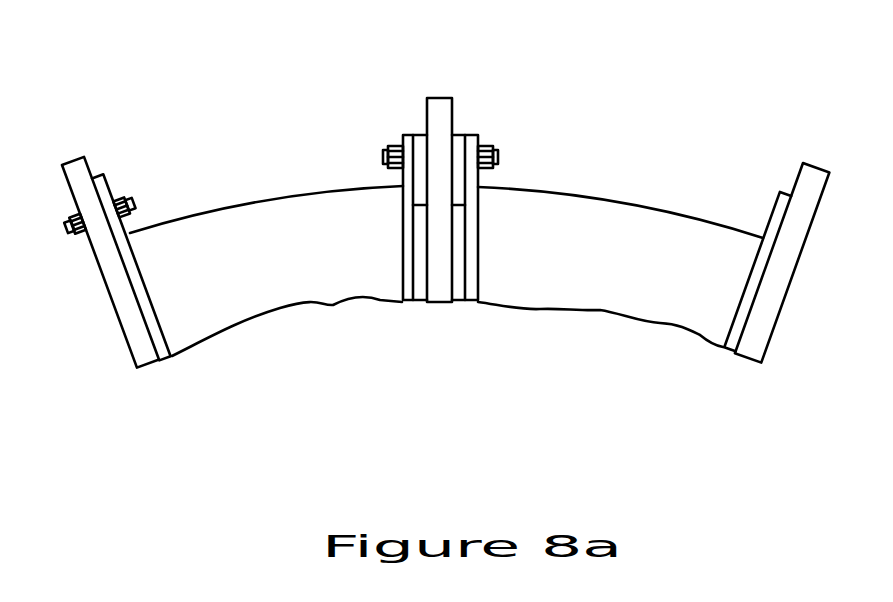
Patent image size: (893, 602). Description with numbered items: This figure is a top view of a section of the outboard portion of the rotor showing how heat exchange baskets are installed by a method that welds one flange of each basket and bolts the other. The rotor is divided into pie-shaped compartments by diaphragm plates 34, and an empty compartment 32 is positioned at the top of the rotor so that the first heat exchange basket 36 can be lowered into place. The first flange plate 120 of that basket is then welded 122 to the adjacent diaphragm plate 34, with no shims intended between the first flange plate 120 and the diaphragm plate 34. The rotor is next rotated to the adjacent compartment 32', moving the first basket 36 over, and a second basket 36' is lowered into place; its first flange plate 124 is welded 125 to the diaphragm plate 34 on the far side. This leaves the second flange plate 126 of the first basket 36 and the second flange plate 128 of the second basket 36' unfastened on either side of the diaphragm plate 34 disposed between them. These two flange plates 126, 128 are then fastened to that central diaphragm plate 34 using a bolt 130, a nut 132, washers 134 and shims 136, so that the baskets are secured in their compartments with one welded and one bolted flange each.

The compartment 32 is at (266, 129).
The adjacent compartment 32' is at (620, 134).
The diaphragm plate 34 is at (77, 167).
The heat exchange basket 36 is at (287, 351).
The second heat exchange basket 36' is at (600, 341).
The first flange plate 120 is at (130, 214).
The weld 122 is at (97, 183).
The first flange plate 124 is at (747, 303).
The weld 125 is at (730, 242).
The second flange plate 126 is at (412, 282).
The second flange plate 128 is at (468, 275).
The bolt 130 is at (497, 157).
The nut 132 is at (390, 157).
The washers 134 is at (400, 150).
The shims 136 is at (418, 190).